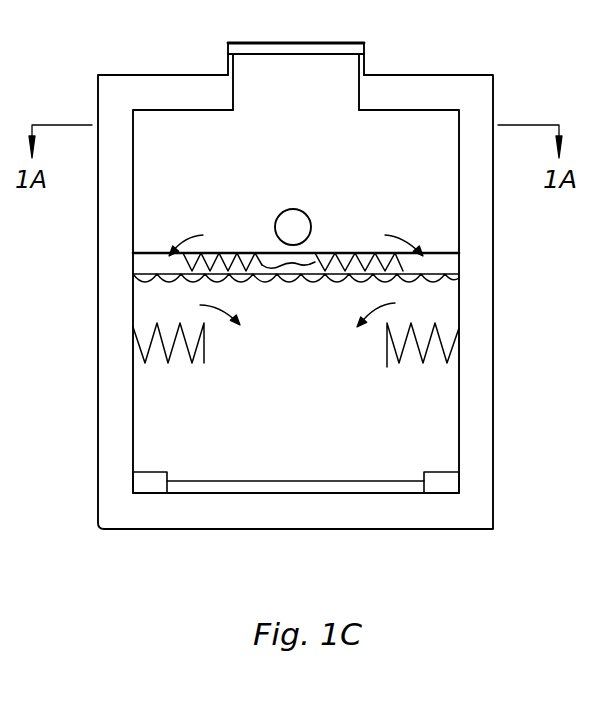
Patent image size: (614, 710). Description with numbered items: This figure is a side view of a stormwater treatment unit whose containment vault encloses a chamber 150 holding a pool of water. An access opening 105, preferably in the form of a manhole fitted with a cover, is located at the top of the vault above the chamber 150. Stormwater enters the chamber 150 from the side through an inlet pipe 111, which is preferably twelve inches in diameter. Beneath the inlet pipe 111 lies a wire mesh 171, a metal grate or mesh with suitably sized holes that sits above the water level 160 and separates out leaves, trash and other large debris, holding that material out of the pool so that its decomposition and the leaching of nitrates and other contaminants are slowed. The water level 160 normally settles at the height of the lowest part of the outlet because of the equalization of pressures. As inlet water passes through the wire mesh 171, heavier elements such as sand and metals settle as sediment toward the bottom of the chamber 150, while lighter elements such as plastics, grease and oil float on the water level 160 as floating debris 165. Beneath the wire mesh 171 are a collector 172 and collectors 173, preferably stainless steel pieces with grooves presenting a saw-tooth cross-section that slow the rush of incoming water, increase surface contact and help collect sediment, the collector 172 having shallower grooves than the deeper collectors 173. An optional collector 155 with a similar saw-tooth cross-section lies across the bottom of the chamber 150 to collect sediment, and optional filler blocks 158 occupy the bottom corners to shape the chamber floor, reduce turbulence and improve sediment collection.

The access opening 105 is at (320, 43).
The inlet pipe 111 is at (295, 210).
The chamber 150 is at (305, 397).
The collector 155 is at (312, 480).
The filler blocks 158 is at (150, 472).
The water level 160 is at (446, 283).
The floating debris 165 is at (367, 278).
The wire mesh 171 is at (220, 253).
The collector 172 is at (237, 265).
The collectors 173 is at (145, 363).